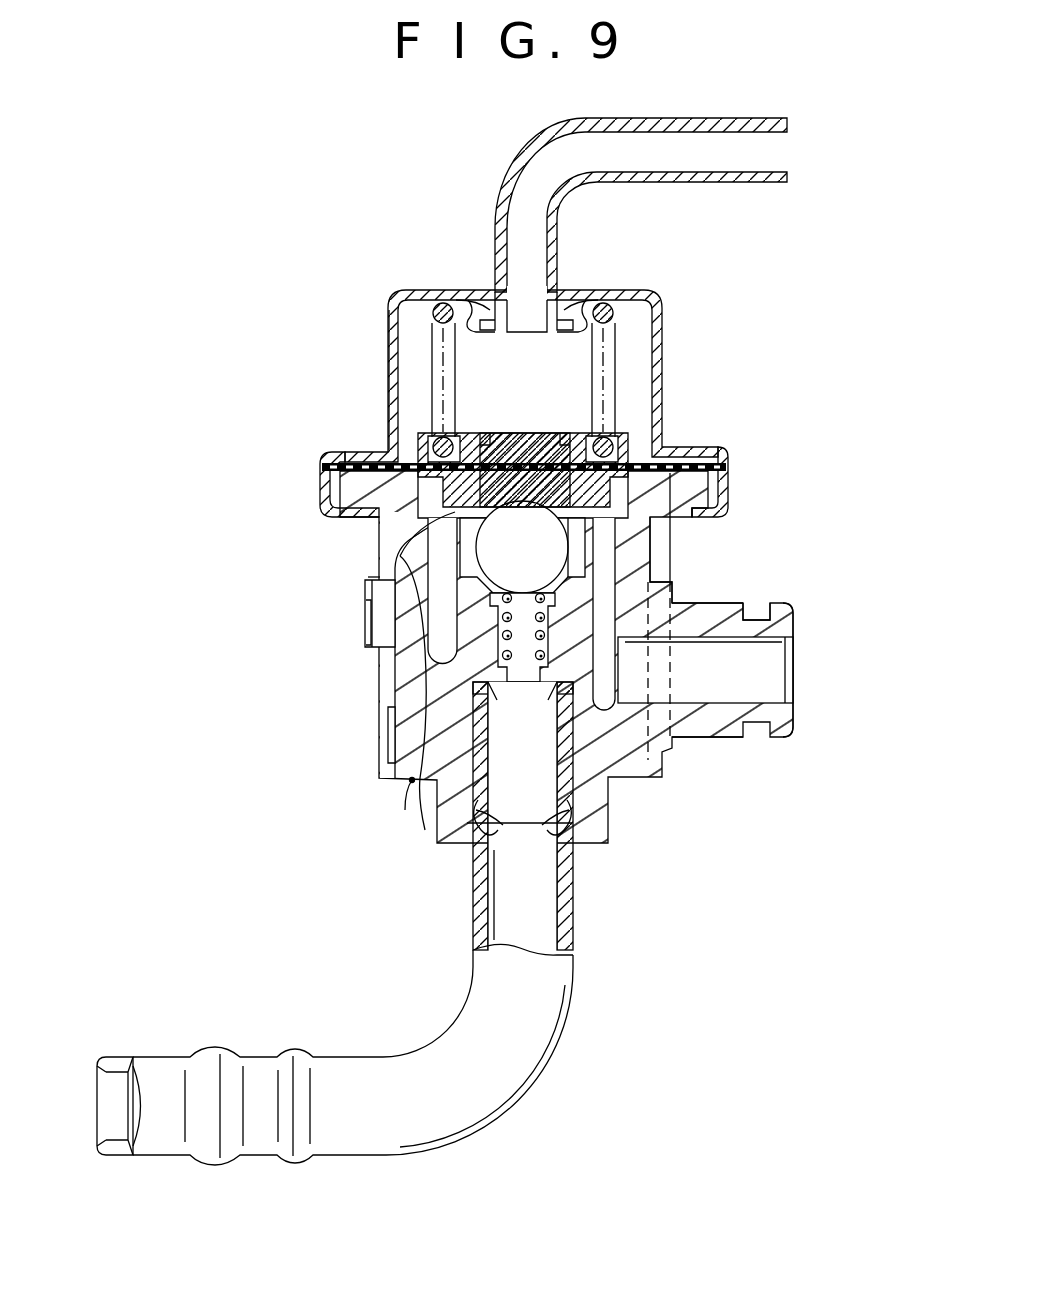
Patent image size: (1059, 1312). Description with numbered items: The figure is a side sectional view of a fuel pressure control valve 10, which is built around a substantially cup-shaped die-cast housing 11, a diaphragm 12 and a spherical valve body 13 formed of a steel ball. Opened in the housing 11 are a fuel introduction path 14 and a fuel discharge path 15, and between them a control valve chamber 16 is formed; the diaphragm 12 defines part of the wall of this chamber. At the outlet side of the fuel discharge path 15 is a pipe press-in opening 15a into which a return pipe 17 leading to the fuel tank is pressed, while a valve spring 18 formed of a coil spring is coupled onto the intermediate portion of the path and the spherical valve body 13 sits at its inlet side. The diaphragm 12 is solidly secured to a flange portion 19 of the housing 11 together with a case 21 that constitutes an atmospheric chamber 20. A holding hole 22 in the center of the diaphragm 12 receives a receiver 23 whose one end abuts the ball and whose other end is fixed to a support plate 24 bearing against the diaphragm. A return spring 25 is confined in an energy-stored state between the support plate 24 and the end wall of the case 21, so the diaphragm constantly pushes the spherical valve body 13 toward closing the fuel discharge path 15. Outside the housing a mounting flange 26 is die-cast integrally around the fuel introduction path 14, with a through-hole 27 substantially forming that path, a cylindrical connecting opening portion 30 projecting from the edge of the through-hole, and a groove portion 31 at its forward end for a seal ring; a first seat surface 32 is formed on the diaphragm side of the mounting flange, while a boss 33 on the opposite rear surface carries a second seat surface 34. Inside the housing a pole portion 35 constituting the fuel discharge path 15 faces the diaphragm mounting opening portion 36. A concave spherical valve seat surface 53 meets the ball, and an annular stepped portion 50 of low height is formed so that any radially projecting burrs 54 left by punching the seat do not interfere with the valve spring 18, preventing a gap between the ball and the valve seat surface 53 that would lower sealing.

The fuel pressure control valve 10 is at (376, 233).
The housing 11 is at (414, 842).
The diaphragm 12 is at (372, 527).
The spherical valve body 13 is at (400, 645).
The fuel introduction path 14 is at (630, 690).
The fuel discharge path 15 is at (420, 758).
The pipe press-in opening 15a is at (562, 838).
The control valve chamber 16 is at (615, 523).
The return pipe 17 is at (477, 887).
The valve spring 18 is at (365, 735).
The flange portion 19 is at (330, 482).
The atmospheric chamber 20 is at (632, 358).
The case 21 is at (395, 336).
The holding hole 22 is at (548, 440).
The receiver 23 is at (510, 467).
The support plate 24 is at (633, 447).
The return spring 25 is at (443, 304).
The mounting flange 26 is at (663, 775).
The through-hole 27 is at (697, 693).
The connecting opening portion 30 is at (729, 738).
The groove portion 31 is at (757, 727).
The first seat surface 32 is at (652, 578).
The boss 33 is at (375, 626).
The second seat surface 34 is at (368, 584).
The pole portion 35 is at (395, 550).
The diaphragm mounting opening portion 36 is at (650, 470).
The stepped portion 50 is at (665, 602).
The valve seat surface 53 is at (570, 580).
The burrs 54 is at (480, 640).